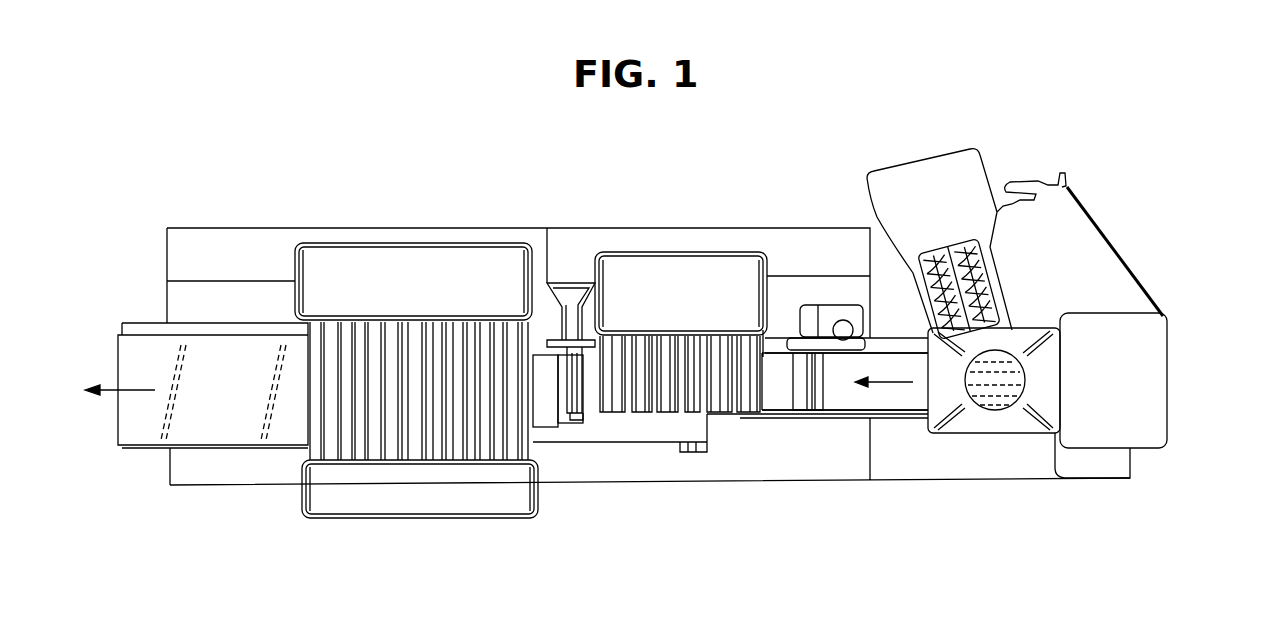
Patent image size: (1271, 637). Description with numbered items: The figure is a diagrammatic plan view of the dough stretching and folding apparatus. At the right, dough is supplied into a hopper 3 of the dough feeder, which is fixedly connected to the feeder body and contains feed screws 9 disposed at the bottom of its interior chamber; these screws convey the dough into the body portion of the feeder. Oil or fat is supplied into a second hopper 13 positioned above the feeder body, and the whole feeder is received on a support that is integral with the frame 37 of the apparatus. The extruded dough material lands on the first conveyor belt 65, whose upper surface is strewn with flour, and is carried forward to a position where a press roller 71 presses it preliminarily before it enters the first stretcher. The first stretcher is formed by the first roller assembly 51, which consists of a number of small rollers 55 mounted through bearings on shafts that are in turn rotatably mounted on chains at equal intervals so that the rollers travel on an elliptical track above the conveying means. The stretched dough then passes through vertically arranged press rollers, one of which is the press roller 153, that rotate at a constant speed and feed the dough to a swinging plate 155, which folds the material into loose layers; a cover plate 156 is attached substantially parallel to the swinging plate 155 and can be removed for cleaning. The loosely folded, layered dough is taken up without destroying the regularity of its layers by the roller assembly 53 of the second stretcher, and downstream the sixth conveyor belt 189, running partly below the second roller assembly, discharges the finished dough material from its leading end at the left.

The hopper 3 is at (866, 193).
The feed screw 9 is at (998, 280).
The hopper 13 is at (990, 418).
The frame 37 is at (1140, 372).
The first roller assembly 51 is at (655, 251).
The roller assembly 53 is at (432, 243).
The small rollers 55 is at (317, 450).
The first conveyor belt 65 is at (893, 398).
The press roller 71 is at (801, 400).
The press roller 153 is at (580, 403).
The swinging plate 155 is at (560, 420).
The cover plate 156 is at (546, 420).
The sixth conveyor belt 189 is at (137, 440).